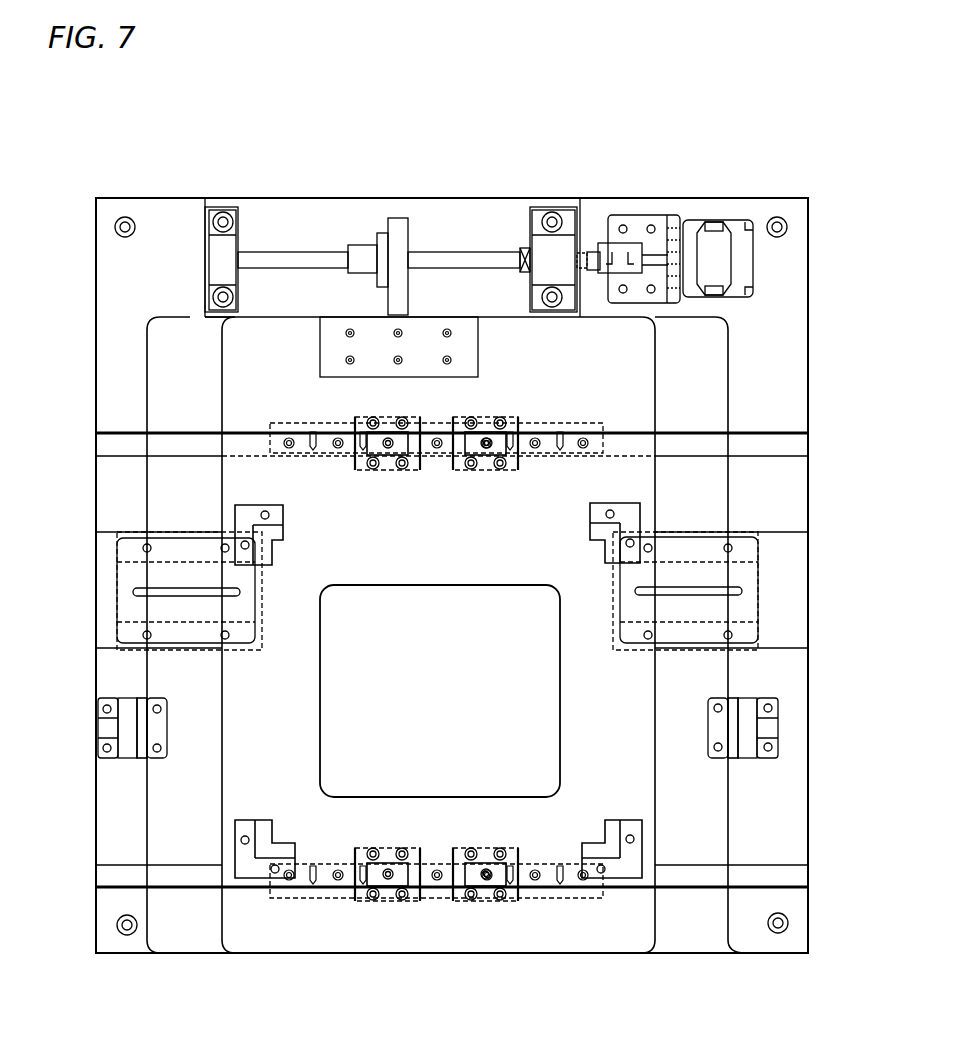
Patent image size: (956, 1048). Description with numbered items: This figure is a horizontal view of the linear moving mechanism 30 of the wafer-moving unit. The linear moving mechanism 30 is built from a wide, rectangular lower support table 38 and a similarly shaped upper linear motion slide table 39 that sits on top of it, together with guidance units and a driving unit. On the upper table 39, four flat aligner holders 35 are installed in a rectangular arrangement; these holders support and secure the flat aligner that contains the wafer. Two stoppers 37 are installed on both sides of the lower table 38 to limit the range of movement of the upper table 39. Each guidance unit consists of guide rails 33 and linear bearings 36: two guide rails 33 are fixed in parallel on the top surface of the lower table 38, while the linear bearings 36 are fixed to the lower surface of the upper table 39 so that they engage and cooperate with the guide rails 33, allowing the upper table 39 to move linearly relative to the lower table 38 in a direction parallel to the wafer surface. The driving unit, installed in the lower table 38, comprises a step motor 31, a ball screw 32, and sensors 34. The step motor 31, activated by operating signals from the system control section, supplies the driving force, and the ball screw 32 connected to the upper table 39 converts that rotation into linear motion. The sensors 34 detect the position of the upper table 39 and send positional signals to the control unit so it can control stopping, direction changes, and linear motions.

The linear moving mechanism 30 is at (688, 144).
The step motor 31 is at (713, 233).
The ball screw 32 is at (510, 176).
The guide rails 33 is at (795, 447).
The sensors 34 is at (170, 577).
The flat aligner holders 35 is at (253, 505).
The linear bearings 36 is at (458, 417).
The stoppers 37 is at (122, 698).
The lower support table 38 is at (778, 377).
The upper linear motion slide table 39 is at (300, 923).